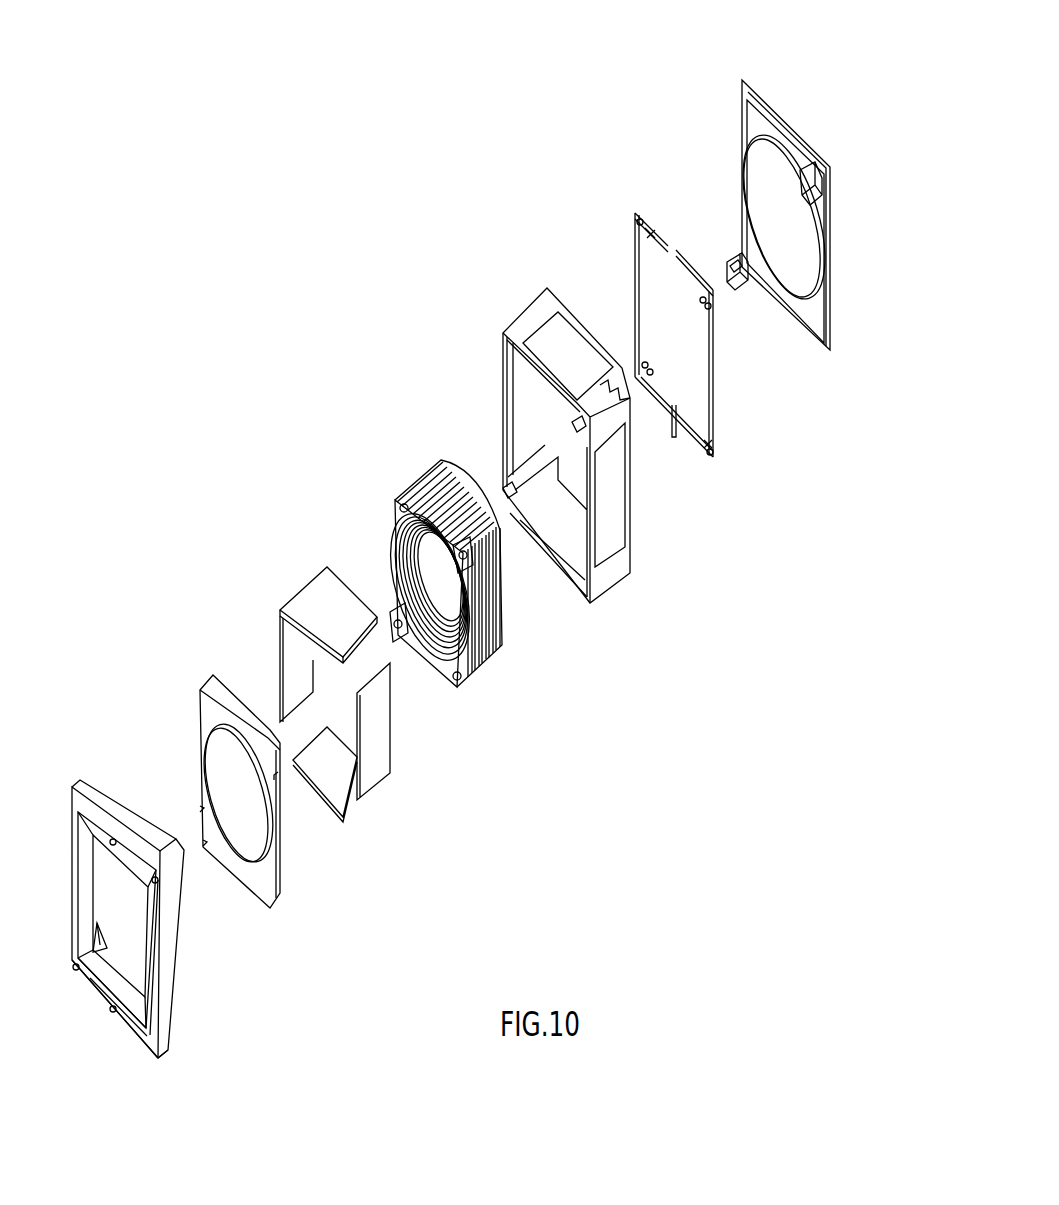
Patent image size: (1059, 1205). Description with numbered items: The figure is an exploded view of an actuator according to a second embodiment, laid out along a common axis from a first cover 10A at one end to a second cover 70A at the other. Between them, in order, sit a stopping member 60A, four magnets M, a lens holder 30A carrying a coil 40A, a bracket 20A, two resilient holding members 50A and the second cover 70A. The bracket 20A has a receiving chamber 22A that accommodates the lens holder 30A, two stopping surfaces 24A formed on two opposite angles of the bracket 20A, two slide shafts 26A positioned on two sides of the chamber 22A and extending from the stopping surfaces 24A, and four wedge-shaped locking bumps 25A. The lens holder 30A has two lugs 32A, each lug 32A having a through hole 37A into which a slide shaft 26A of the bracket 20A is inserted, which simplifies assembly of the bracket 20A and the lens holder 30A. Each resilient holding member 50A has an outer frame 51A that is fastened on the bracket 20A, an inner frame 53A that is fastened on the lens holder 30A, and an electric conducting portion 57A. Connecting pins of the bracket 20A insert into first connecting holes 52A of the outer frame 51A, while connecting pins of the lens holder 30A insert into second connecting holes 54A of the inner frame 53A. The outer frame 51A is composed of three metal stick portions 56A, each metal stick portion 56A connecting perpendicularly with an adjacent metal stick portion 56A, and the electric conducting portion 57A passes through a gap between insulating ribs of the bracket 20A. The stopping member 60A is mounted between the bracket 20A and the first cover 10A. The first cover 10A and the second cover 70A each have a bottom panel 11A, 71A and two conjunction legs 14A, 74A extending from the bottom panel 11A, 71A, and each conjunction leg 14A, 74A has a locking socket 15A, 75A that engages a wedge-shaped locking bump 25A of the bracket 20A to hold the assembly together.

The first cover 10A is at (92, 767).
The bottom panel 11A is at (130, 1000).
The conjunction legs 14A is at (175, 862).
The locking socket 15A is at (100, 940).
The stopping member 60A is at (201, 663).
The magnets M is at (292, 633).
The lens holder 30A is at (444, 555).
The lugs 32A is at (395, 613).
The through hole 37A is at (398, 635).
The coil 40A is at (387, 471).
The bracket 20A is at (547, 423).
The receiving chamber 22A is at (556, 414).
The stopping surface 24A is at (548, 447).
The wedge-shaped locking bumps 25A is at (597, 400).
The slide shafts 26A is at (505, 490).
The resilient holding member 50A is at (705, 341).
The outer frame 51A is at (635, 263).
The first connecting holes 52A is at (640, 228).
The inner frame 53A is at (703, 363).
The second connecting holes 54A is at (652, 235).
The metal stick portions 56A is at (712, 296).
The electric conducting portion 57A is at (657, 456).
The second cover 70A is at (786, 218).
The bottom panel 71A is at (817, 307).
The conjunction legs 74A is at (737, 258).
The locking socket 75A is at (730, 272).